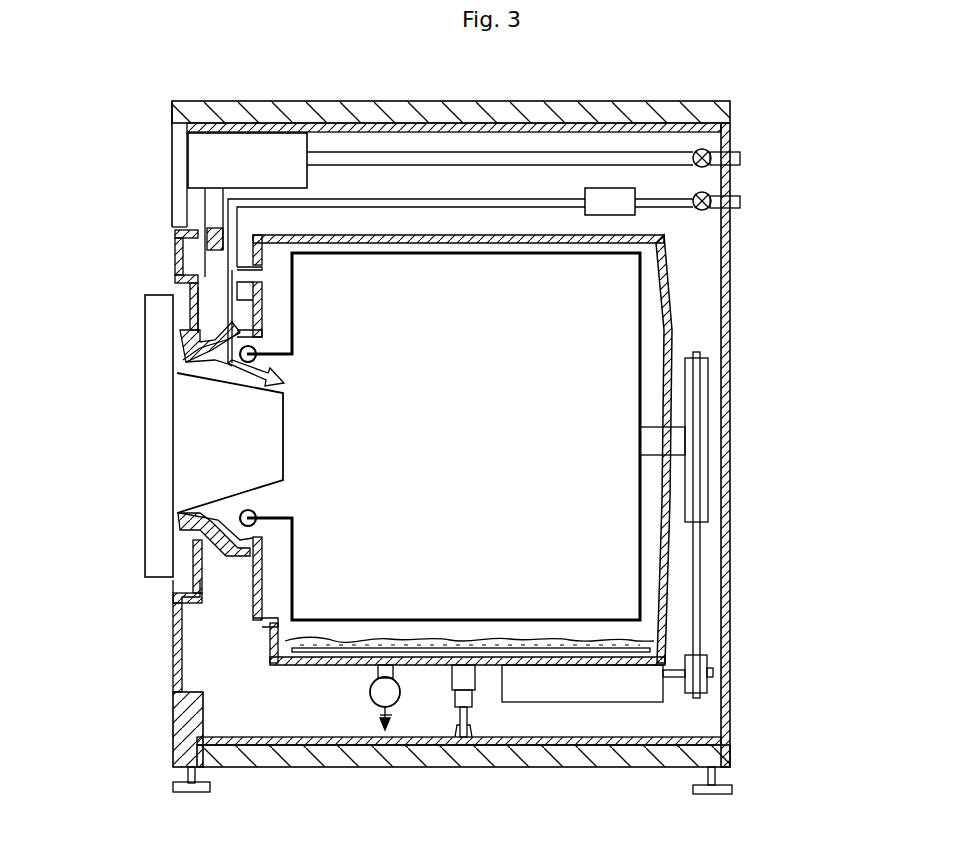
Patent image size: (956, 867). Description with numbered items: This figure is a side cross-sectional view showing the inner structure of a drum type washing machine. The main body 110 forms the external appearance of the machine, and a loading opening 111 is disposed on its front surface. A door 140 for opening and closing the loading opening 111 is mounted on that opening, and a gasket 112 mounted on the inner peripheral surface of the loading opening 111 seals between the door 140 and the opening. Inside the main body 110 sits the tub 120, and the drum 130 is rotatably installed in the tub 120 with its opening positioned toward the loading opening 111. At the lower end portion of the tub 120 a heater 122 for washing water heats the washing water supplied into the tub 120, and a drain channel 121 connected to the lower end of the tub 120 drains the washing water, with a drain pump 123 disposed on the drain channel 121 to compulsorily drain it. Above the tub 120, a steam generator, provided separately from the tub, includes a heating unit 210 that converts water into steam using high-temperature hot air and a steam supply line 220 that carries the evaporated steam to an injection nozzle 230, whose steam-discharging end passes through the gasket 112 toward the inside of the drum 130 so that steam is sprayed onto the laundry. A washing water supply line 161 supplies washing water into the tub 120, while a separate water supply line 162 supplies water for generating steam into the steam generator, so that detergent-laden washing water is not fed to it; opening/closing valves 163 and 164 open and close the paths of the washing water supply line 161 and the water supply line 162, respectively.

The main body 110 is at (740, 504).
The loading opening 111 is at (197, 375).
The gasket 112 is at (223, 327).
The tub 120 is at (690, 272).
The drain channel 121 is at (375, 667).
The heater for washing water 122 is at (333, 640).
The drain pump 123 is at (395, 705).
The drum 130 is at (660, 350).
The door 140 is at (136, 466).
The washing water supply line 161 is at (447, 158).
The water supply line 162 is at (668, 200).
The opening/closing valve 163 is at (708, 147).
The opening/closing valve 164 is at (708, 212).
The heating unit 210 is at (608, 200).
The steam supply line 220 is at (540, 205).
The injection nozzle 230 is at (272, 371).